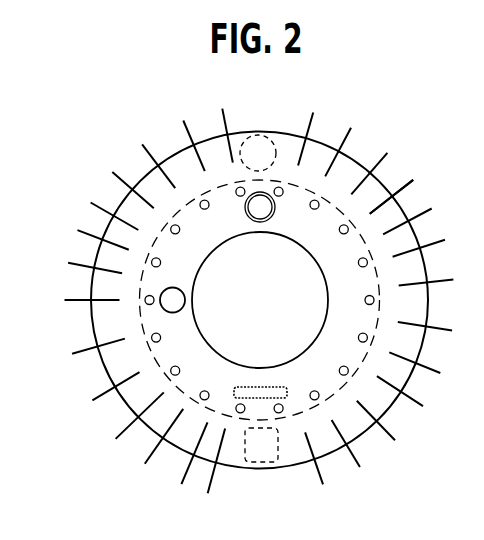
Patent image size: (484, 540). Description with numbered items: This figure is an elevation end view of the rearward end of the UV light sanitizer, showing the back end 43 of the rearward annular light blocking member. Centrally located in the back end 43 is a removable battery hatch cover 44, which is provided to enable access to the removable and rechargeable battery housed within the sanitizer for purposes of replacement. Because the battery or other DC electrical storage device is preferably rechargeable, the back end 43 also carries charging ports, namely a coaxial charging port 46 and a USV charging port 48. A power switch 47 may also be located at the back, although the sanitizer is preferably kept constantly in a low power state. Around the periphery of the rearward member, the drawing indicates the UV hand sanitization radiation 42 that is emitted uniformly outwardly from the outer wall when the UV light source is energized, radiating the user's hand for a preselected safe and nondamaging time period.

The UV hand sanitization radiation 42 is at (96, 198).
The back end 43 is at (362, 235).
The removable battery hatch cover 44 is at (310, 291).
The coaxial charging port 46 is at (265, 192).
The power switch 47 is at (158, 306).
The USV charging port 48 is at (259, 399).